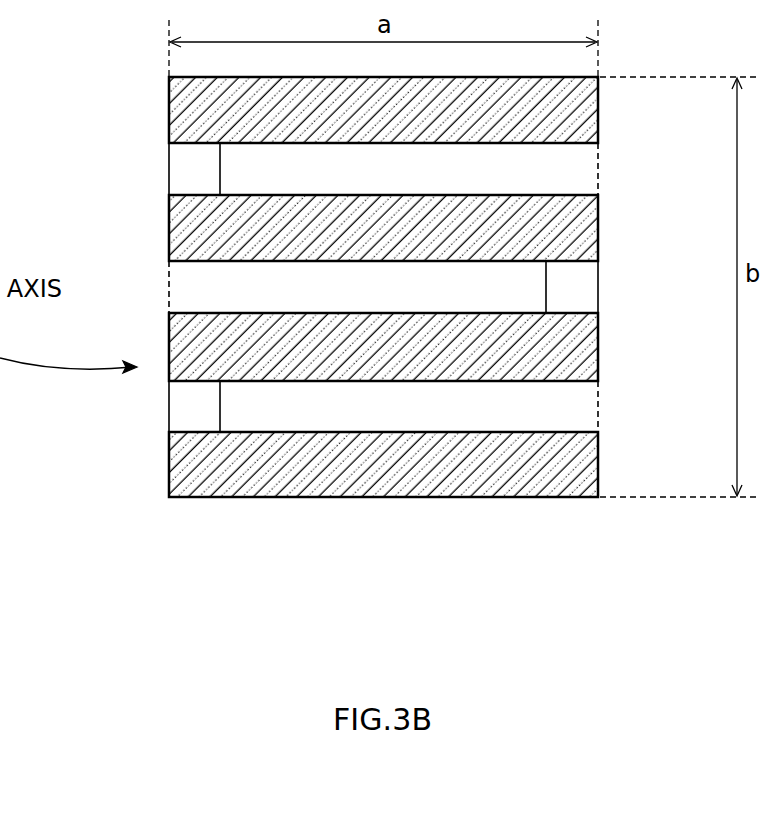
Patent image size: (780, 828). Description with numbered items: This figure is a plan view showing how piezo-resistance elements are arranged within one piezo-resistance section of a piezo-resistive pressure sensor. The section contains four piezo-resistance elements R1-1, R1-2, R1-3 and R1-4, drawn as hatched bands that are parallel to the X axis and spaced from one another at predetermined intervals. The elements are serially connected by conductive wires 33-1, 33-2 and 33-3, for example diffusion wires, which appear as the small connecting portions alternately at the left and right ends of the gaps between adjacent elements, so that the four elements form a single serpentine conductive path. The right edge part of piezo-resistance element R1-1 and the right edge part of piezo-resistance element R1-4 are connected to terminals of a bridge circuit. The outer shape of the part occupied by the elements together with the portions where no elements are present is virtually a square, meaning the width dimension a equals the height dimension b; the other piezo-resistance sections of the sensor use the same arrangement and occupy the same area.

The piezo-resistance element R1-1 is at (580, 108).
The piezo-resistance element R1-2 is at (582, 223).
The piezo-resistance element R1-3 is at (582, 345).
The piezo-resistance element R1-4 is at (577, 463).
The conductive wire 33-1 is at (182, 175).
The conductive wire 33-2 is at (580, 287).
The conductive wire 33-3 is at (182, 393).